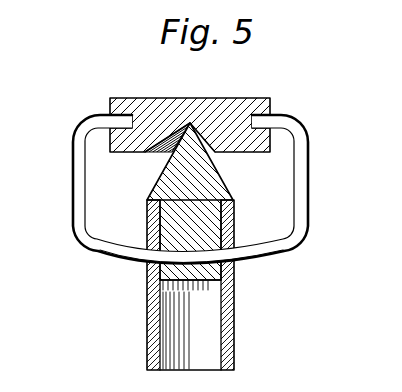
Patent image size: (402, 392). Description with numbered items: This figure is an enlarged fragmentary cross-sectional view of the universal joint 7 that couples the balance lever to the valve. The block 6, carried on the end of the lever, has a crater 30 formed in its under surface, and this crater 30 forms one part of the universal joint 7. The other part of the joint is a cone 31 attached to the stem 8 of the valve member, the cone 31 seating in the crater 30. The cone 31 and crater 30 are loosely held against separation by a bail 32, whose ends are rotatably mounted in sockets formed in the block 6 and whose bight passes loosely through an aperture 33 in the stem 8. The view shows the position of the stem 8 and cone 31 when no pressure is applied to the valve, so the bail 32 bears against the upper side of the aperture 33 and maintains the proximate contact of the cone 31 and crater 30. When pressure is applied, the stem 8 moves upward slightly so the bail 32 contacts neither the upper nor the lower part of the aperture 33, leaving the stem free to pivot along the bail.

The block 6 is at (237, 100).
The universal joint 7 is at (238, 158).
The stem 8 is at (234, 323).
The crater 30 is at (150, 147).
The cone 31 is at (220, 185).
The bail 32 is at (300, 190).
The aperture 33 is at (237, 261).